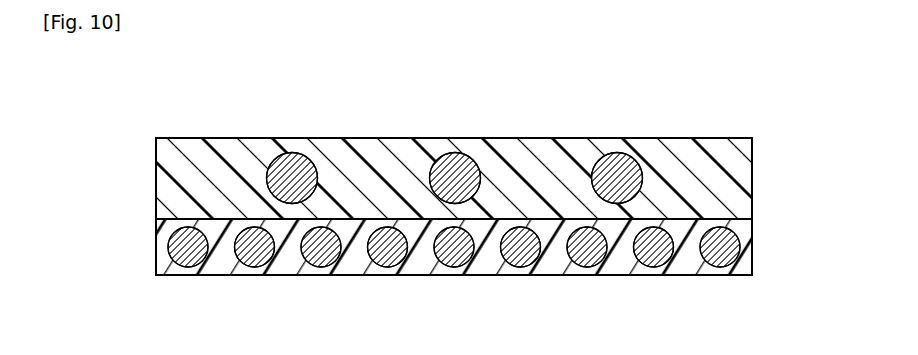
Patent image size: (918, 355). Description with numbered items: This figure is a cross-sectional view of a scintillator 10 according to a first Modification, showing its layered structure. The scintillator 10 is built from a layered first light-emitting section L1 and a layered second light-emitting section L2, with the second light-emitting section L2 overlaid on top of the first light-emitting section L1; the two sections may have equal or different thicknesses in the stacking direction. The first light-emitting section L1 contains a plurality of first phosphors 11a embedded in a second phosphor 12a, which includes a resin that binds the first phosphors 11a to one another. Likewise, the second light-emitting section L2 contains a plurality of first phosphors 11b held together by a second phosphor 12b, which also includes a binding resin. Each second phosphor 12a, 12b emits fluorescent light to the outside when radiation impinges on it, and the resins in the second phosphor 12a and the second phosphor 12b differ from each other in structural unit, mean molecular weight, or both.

The scintillator 10 is at (740, 100).
The first phosphors 11a is at (188, 268).
The first phosphors 11b is at (294, 158).
The second phosphor 12a is at (752, 245).
The second phosphor 12b is at (752, 171).
The first light-emitting section L1 is at (145, 247).
The second light-emitting section L2 is at (145, 172).